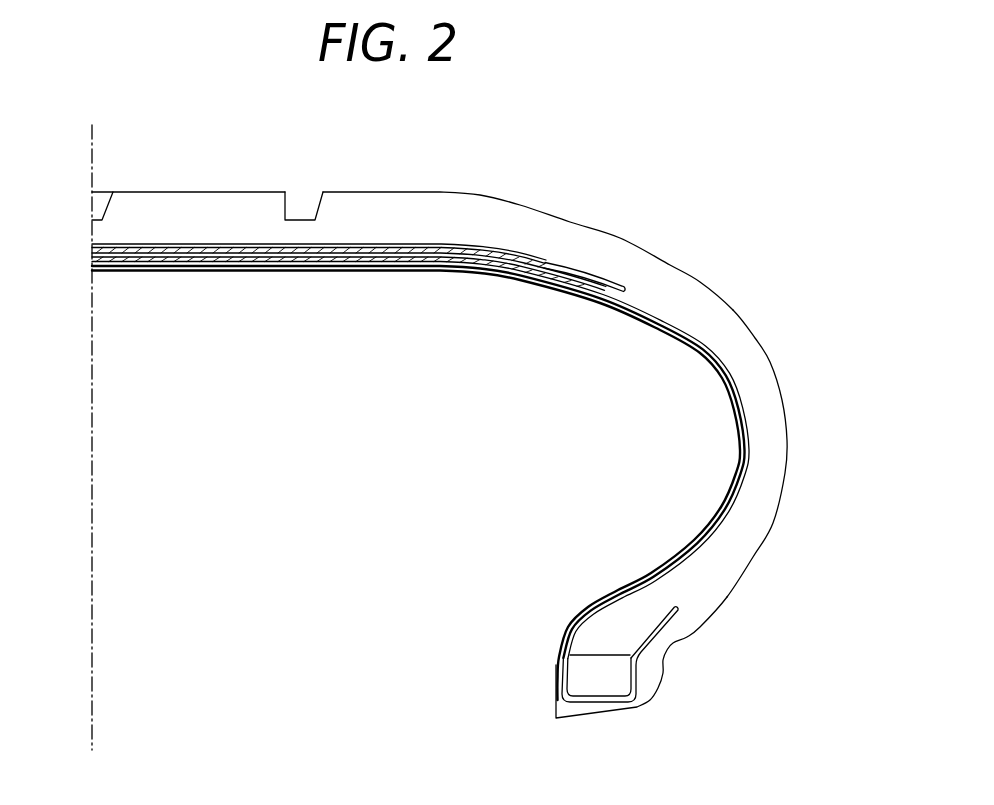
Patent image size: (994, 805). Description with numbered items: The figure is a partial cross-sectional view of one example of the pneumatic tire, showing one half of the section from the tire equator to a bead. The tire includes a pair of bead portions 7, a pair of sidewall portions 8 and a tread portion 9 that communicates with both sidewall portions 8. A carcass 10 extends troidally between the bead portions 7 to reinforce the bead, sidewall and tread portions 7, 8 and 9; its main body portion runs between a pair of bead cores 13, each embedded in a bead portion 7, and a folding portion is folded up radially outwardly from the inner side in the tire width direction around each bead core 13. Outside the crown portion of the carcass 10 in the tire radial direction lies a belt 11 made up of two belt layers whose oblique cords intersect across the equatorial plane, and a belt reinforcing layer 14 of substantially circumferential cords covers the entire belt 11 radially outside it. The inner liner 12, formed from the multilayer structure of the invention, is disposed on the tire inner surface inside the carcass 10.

The bead portion 7 is at (675, 643).
The sidewall portion 8 is at (762, 345).
The tread portion 9 is at (177, 192).
The carcass 10 is at (662, 323).
The belt 11 is at (366, 250).
The inner liner 12 is at (586, 612).
The bead core 13 is at (598, 680).
The belt reinforcing layer 14 is at (523, 258).